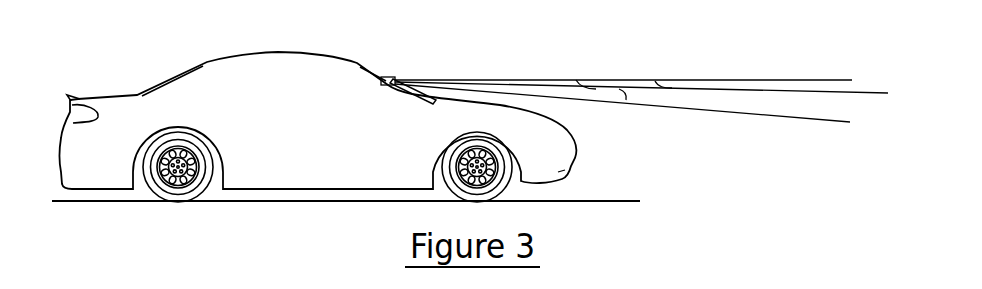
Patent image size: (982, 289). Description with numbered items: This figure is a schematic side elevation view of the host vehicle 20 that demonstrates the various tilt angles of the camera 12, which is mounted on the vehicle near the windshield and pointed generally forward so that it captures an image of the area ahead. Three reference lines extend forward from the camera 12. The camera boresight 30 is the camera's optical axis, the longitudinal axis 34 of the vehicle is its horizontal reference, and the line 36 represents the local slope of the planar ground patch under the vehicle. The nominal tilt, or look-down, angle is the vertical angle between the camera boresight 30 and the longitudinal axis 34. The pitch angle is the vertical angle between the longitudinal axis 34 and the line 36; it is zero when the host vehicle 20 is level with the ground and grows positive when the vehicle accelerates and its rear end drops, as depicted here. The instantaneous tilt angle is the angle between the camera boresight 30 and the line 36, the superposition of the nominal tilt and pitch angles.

The host vehicle 20 is at (278, 53).
The camera 12 is at (384, 77).
The camera boresight 30 is at (708, 110).
The longitudinal axis of the vehicle 34 is at (780, 80).
The line representative of the local slope under the vehicle 36 is at (873, 90).